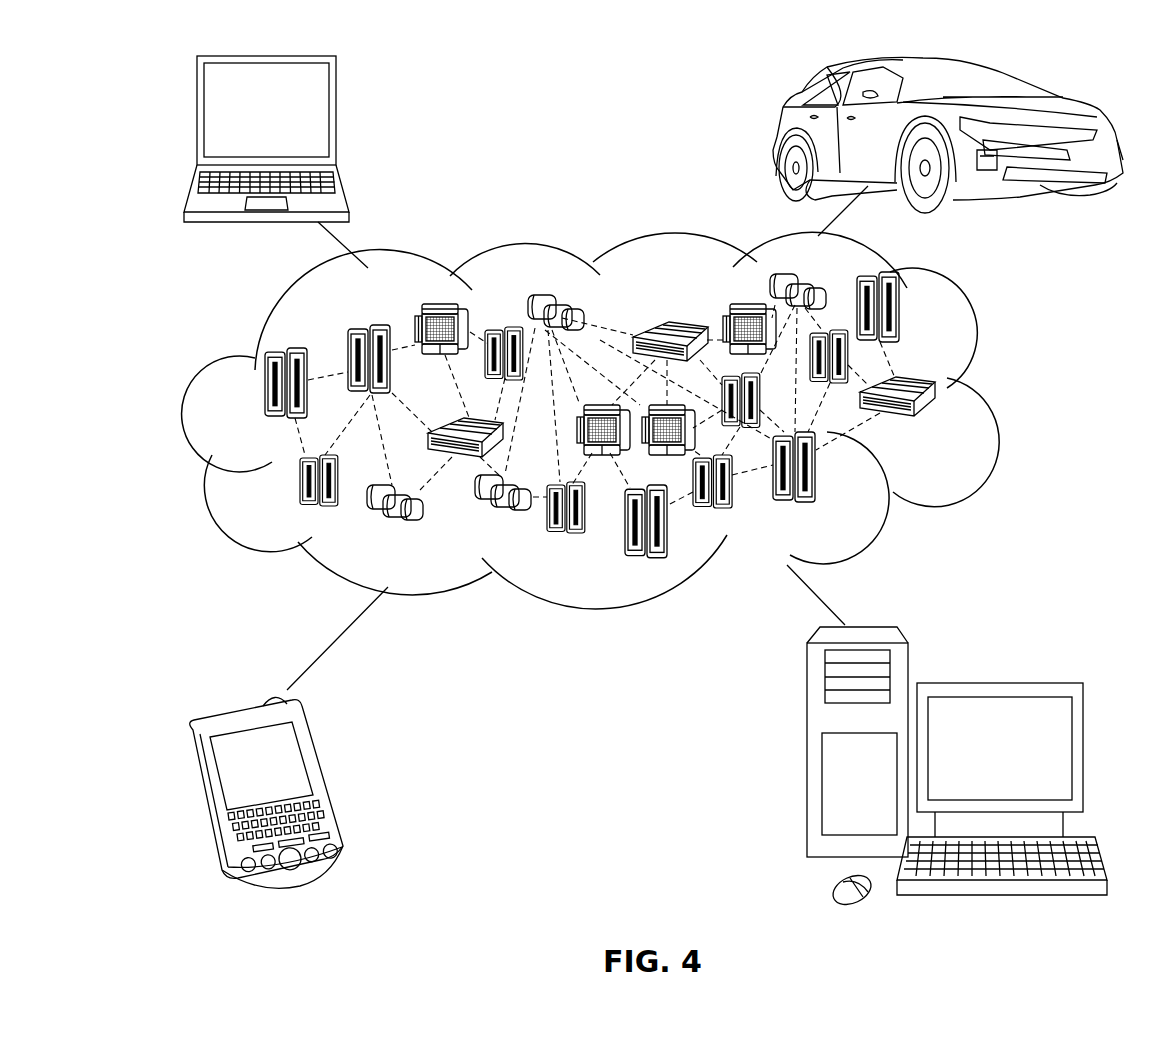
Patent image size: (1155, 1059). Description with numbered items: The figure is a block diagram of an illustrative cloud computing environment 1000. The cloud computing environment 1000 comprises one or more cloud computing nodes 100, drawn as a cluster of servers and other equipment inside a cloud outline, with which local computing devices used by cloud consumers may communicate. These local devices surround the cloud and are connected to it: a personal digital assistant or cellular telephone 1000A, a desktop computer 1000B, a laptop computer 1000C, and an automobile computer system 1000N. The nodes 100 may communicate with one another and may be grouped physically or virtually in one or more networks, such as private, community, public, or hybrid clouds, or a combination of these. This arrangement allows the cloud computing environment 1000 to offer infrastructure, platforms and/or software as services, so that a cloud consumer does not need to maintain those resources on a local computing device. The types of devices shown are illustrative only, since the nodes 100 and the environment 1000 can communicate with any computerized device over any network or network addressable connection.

The cloud computing environment 1000 is at (997, 393).
The cloud computing nodes 100 is at (940, 424).
The personal digital assistant (PDA) or cellular telephone 1000A is at (325, 780).
The desktop computer 1000B is at (997, 683).
The laptop computer 1000C is at (340, 118).
The automobile computer system 1000N is at (776, 133).